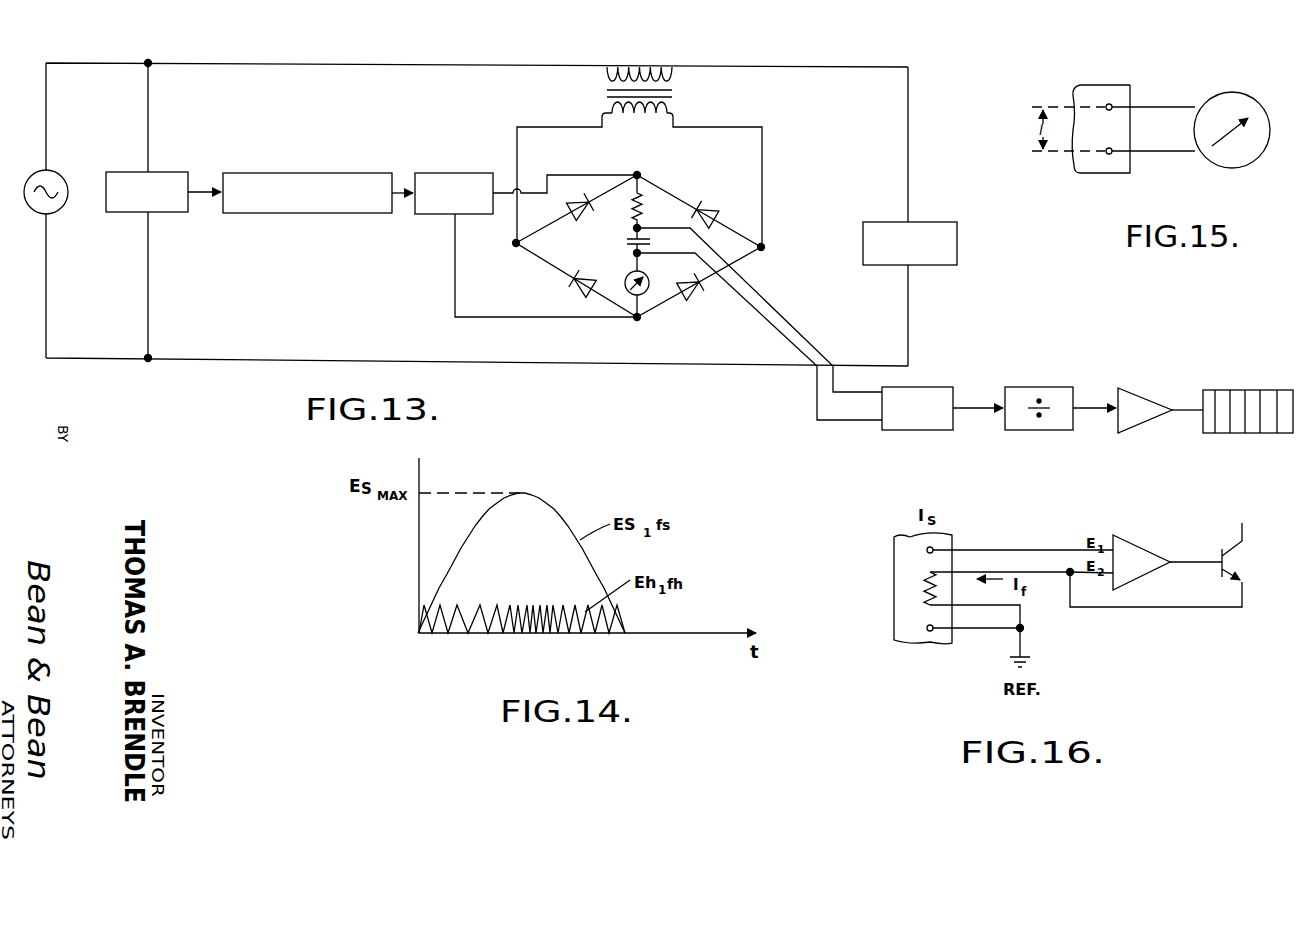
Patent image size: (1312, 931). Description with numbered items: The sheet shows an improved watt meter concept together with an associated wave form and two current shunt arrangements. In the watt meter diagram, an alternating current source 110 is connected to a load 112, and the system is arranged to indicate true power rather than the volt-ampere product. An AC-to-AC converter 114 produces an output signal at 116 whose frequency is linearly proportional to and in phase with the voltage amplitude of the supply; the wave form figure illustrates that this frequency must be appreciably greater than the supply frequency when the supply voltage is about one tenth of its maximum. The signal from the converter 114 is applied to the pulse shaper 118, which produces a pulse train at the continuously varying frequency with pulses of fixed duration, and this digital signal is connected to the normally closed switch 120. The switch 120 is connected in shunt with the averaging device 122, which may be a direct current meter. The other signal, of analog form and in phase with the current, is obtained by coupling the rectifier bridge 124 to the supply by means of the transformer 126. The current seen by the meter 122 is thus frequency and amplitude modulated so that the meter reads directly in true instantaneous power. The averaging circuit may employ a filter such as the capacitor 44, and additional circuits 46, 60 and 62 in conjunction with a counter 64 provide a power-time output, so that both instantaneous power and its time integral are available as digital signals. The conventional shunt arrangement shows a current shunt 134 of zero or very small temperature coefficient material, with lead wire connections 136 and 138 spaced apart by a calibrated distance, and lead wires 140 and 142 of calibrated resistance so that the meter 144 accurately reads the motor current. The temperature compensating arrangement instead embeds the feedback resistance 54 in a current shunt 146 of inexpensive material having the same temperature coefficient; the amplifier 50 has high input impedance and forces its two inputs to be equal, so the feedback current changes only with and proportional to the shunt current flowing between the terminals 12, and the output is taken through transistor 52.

In FIG. 13, the alternating current source 110 is at (50, 172).
In FIG. 13, the AC-to-AC converter 114 is at (162, 172).
In FIG. 13, the converter output signal 116 is at (202, 190).
In FIG. 13, the pulse shaper 118 is at (310, 173).
In FIG. 13, the normally closed switch 120 is at (461, 172).
In FIG. 13, the transformer 126 is at (657, 60).
In FIG. 13, the rectifier bridge 124 is at (731, 211).
In FIG. 13, the capacitor 44 is at (636, 229).
In FIG. 13, the averaging device 122 is at (646, 296).
In FIG. 13, the load 112 is at (957, 237).
In FIG. 13, the additional circuit 46 is at (908, 430).
In FIG. 13, the additional circuit 60 is at (1033, 430).
In FIG. 13, the additional circuit 62 is at (1137, 428).
In FIG. 13, the counter 64 is at (1237, 433).
In FIG. 15, the lead wire connection 136 is at (1108, 75).
In FIG. 15, the current shunt 134 is at (1109, 104).
In FIG. 15, the lead wire connection 138 is at (1109, 154).
In FIG. 15, the lead wire 140 is at (1167, 105).
In FIG. 15, the lead wire 142 is at (1180, 154).
In FIG. 15, the meter 144 is at (1242, 96).
In FIG. 16, the current shunt 146 is at (894, 552).
In FIG. 16, the terminals 12 is at (934, 548).
In FIG. 16, the feedback resistance 54 is at (925, 586).
In FIG. 16, the amplifier 50 is at (1137, 553).
In FIG. 16, the transistor 52 is at (1244, 561).